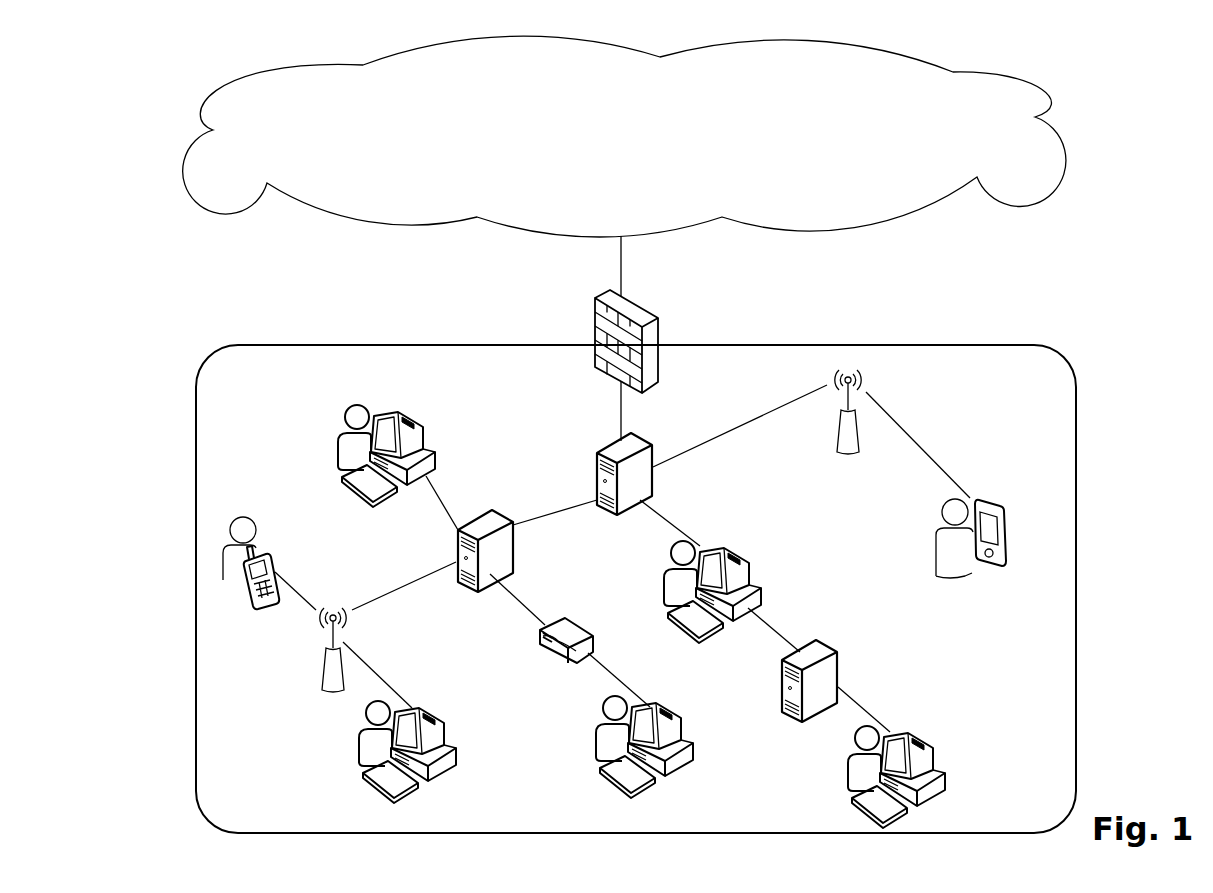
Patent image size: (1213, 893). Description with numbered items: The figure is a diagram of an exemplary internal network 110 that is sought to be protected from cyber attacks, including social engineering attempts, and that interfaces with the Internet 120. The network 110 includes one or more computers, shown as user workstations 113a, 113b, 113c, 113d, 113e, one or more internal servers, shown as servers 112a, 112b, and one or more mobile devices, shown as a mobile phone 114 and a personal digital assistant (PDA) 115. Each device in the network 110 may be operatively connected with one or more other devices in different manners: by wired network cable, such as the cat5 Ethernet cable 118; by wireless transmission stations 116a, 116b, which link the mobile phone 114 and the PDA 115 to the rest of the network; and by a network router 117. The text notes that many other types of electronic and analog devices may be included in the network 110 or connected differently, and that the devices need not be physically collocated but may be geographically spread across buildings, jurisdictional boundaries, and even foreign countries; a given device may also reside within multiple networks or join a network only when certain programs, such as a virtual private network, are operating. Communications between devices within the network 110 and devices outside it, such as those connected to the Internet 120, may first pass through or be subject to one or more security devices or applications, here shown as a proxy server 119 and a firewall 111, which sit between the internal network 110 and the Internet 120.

The network 110 is at (967, 330).
The firewall 111 is at (658, 318).
The server 112a is at (517, 546).
The server 112b is at (840, 657).
The user workstation 113a is at (427, 433).
The user workstation 113b is at (750, 563).
The user workstation 113c is at (937, 752).
The user workstation 113d is at (683, 727).
The user workstation 113e is at (448, 723).
The mobile phone 114 is at (270, 553).
The personal digital assistant (PDA) 115 is at (1009, 513).
The wireless transmission station 116a is at (858, 377).
The wireless transmission station 116b is at (347, 622).
The router 117 is at (592, 623).
The cat5 Ethernet cable 118 is at (547, 518).
The proxy server 119 is at (655, 470).
The Internet 120 is at (1073, 66).